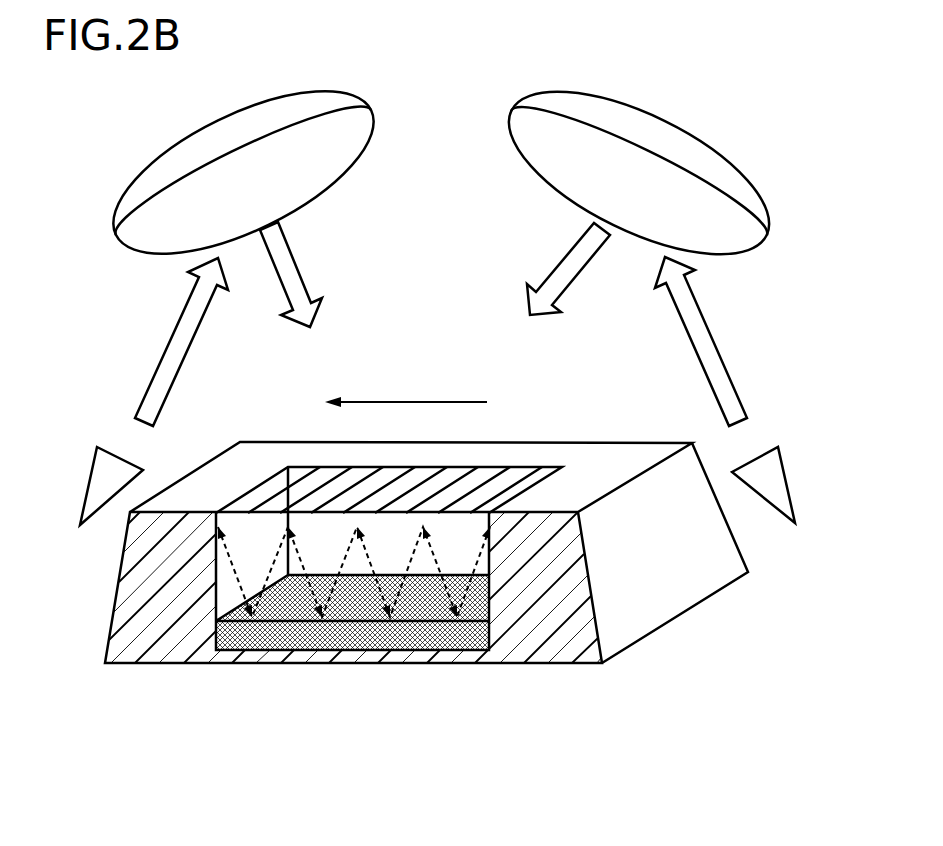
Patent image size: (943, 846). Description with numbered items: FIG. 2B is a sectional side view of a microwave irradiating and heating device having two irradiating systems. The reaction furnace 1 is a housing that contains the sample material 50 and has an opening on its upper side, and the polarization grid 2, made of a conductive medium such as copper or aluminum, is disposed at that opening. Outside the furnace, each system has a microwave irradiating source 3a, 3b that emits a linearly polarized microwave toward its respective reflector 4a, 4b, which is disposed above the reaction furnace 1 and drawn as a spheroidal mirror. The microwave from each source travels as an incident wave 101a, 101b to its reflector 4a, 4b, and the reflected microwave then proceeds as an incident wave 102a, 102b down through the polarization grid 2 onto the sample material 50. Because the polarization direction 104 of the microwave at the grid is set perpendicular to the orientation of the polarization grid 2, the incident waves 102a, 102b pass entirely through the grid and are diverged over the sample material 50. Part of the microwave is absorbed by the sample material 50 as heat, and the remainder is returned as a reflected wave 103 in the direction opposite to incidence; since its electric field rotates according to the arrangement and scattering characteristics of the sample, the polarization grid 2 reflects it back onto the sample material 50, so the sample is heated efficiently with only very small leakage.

The reaction furnace 1 is at (145, 583).
The polarization grid 2 is at (277, 493).
The microwave irradiating source 3a is at (788, 466).
The microwave irradiating source 3b is at (90, 470).
The reflector 4a is at (698, 123).
The reflector 4b is at (197, 117).
The sample material 50 is at (272, 645).
The incident wave 101a is at (715, 335).
The incident wave 101b is at (167, 335).
The incident wave 102a is at (557, 263).
The incident wave 102b is at (300, 260).
The reflected wave 103 is at (343, 557).
The polarization direction 104 is at (406, 392).